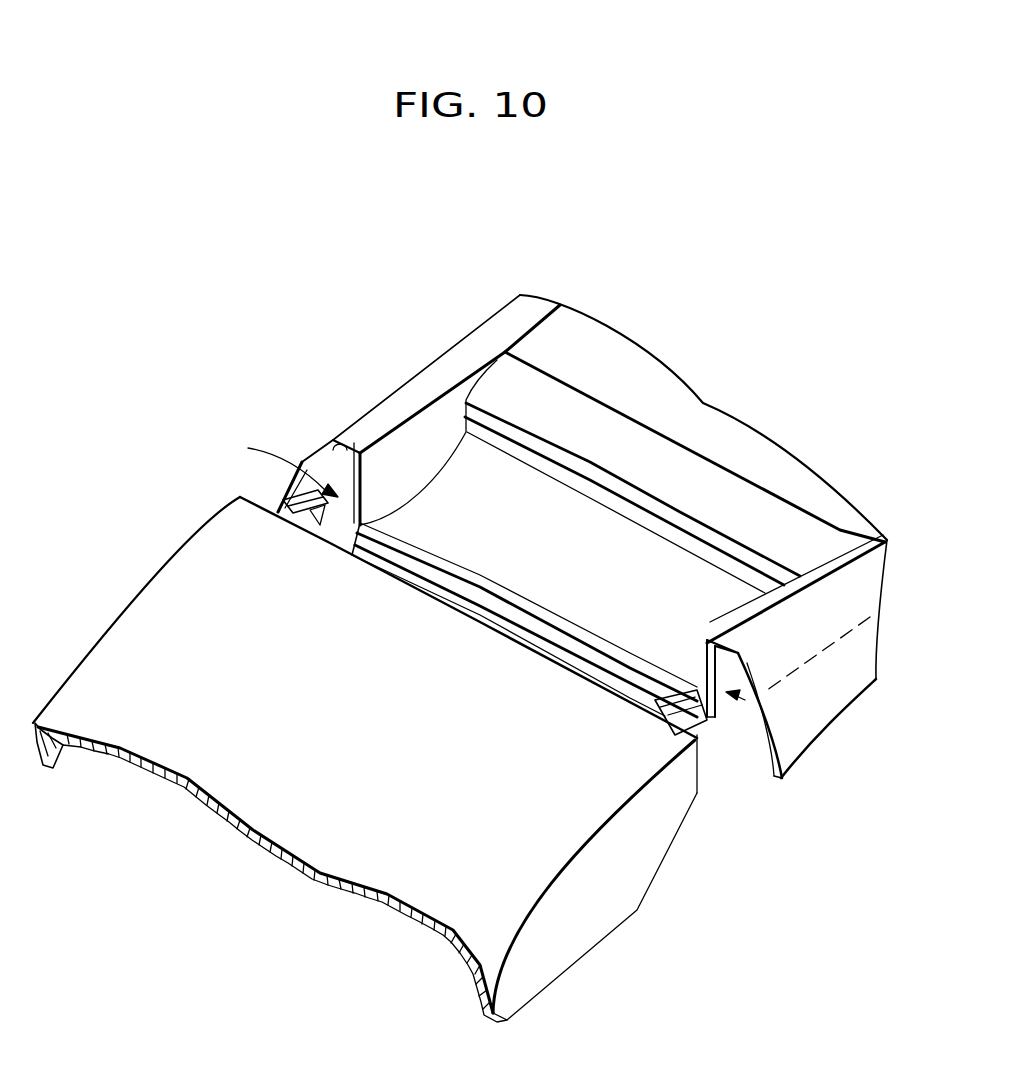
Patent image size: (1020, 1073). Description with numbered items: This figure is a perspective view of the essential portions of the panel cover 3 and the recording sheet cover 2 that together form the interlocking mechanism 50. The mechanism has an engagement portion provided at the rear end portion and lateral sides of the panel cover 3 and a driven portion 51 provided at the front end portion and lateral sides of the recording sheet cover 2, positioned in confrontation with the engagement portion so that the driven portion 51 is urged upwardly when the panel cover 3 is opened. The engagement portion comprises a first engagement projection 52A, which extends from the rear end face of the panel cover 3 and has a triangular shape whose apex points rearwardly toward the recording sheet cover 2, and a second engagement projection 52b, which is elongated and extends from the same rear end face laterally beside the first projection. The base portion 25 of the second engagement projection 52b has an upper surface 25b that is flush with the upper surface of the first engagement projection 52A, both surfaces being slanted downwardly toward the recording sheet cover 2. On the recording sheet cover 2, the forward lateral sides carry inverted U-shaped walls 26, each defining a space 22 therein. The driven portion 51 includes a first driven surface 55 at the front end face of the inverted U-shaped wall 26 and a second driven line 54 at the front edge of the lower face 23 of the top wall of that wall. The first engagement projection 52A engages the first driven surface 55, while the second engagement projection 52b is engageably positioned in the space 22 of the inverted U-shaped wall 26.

The recording sheet cover 2 is at (703, 403).
The panel cover 3 is at (273, 843).
The space 22 is at (290, 478).
The lower face of top wall 23 is at (355, 455).
The base portion 25 is at (282, 508).
The upper surface 25b is at (318, 520).
The inverted U-shaped wall 26 is at (408, 460).
The interlocking mechanism 50 is at (832, 747).
The driven portion 51 is at (241, 335).
The first engagement projection 52A is at (325, 520).
The second engagement projection 52b is at (290, 515).
The second driven line 54 is at (340, 447).
The first driven surface 55 is at (323, 455).